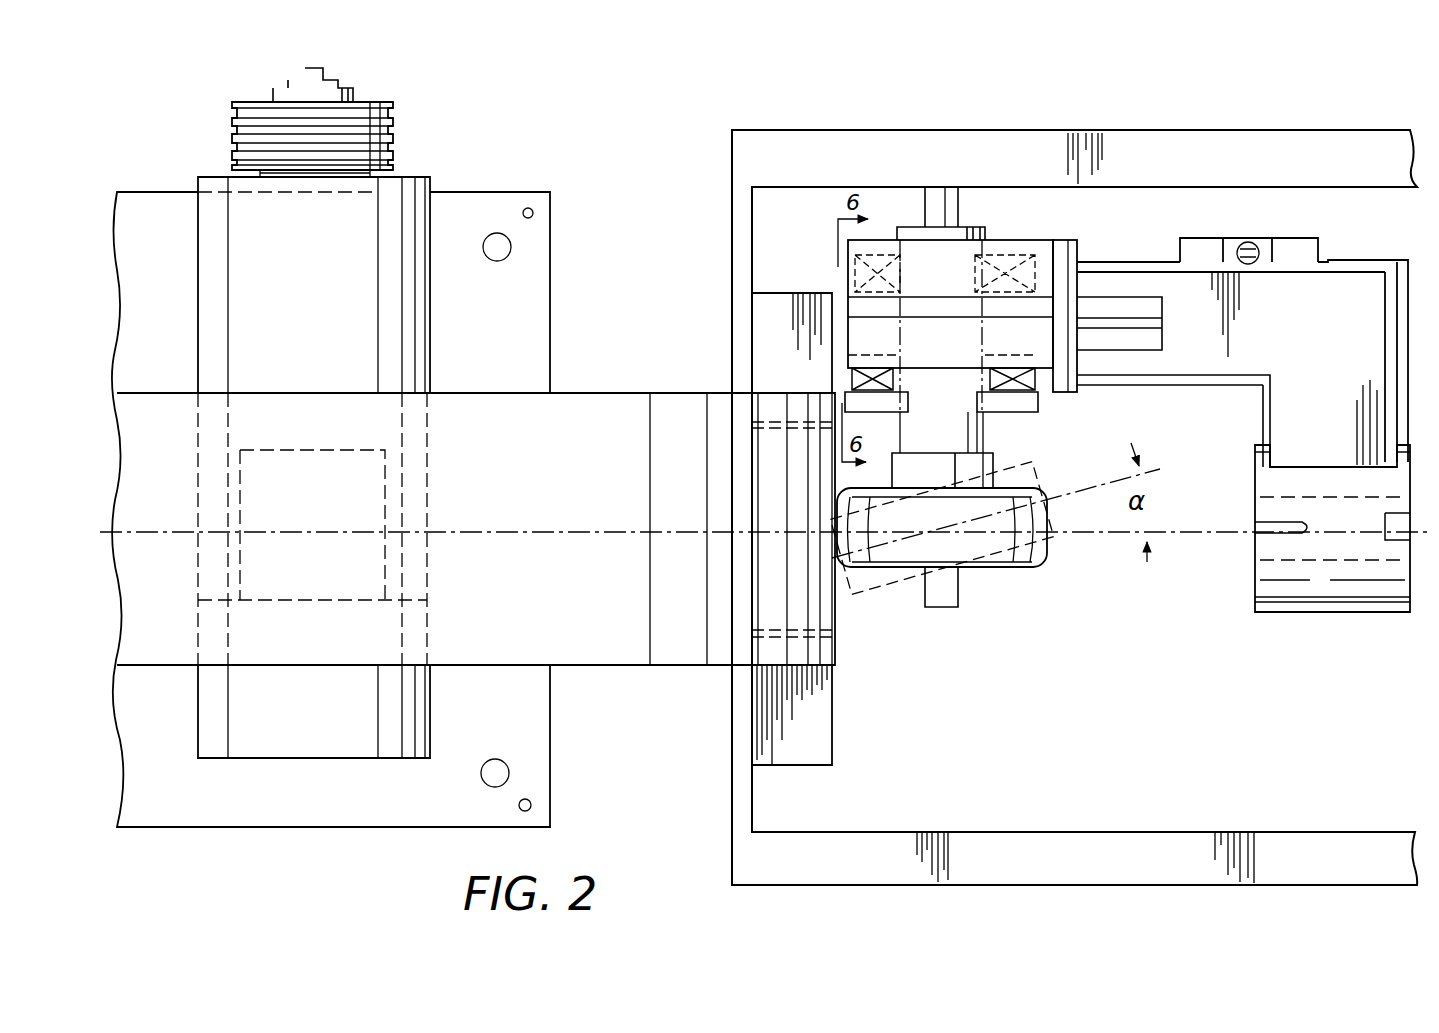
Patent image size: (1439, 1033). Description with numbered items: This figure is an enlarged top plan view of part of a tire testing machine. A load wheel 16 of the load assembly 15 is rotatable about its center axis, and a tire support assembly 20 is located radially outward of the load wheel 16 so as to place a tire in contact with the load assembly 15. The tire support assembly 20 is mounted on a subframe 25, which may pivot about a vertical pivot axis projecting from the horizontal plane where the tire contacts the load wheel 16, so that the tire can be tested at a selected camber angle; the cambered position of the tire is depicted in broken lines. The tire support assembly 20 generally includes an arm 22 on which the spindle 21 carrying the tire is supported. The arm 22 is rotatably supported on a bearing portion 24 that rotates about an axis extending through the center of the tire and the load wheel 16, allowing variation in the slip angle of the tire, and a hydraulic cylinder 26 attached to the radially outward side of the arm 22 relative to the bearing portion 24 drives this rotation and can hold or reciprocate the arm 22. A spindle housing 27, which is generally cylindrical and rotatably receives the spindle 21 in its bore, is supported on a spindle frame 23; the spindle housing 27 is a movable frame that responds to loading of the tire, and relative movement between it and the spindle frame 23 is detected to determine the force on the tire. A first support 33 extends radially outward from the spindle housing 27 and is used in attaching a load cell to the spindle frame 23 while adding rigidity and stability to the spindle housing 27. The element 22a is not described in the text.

The load assembly 15 is at (615, 676).
The load wheel 16 is at (595, 403).
The tire support assembly 20 is at (1146, 636).
The spindle 21 is at (937, 601).
The arm 22 is at (1145, 265).
The mounting plate 22a is at (1077, 238).
The spindle frame 23 is at (877, 310).
The bearing portion 24 is at (1322, 592).
The subframe 25 is at (1014, 811).
The hydraulic cylinder 26 is at (1260, 243).
The spindle housing 27 is at (908, 227).
The first support 33 is at (852, 398).